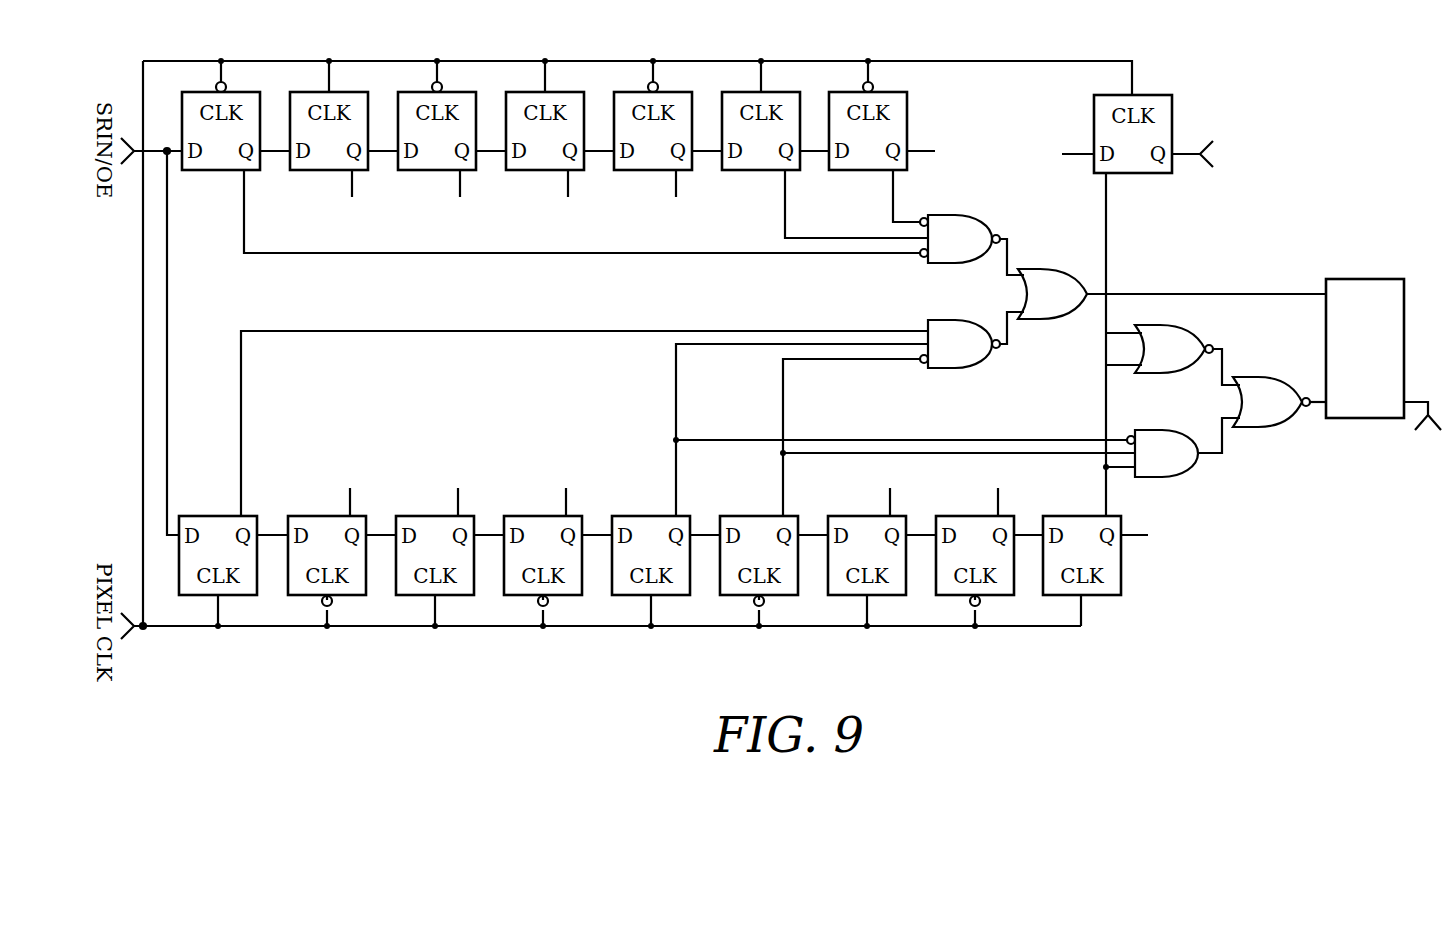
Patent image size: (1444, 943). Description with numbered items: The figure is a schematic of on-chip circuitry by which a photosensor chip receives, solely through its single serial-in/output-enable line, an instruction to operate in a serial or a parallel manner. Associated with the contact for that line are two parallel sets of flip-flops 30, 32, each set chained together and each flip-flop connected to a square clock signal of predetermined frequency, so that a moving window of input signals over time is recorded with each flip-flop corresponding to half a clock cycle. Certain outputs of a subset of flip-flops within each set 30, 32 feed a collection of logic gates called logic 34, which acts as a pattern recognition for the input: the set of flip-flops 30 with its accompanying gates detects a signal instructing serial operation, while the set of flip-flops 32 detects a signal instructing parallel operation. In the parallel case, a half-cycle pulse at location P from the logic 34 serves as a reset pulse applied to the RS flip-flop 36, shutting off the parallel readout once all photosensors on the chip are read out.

The set of flip-flops 30 is at (959, 131).
The set of flip-flops 32 is at (1173, 566).
The logic 34 is at (1044, 338).
The RS flip-flop 36 is at (1366, 278).